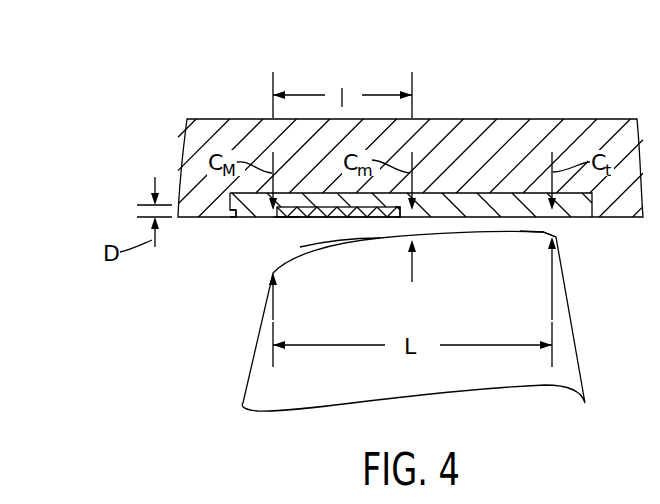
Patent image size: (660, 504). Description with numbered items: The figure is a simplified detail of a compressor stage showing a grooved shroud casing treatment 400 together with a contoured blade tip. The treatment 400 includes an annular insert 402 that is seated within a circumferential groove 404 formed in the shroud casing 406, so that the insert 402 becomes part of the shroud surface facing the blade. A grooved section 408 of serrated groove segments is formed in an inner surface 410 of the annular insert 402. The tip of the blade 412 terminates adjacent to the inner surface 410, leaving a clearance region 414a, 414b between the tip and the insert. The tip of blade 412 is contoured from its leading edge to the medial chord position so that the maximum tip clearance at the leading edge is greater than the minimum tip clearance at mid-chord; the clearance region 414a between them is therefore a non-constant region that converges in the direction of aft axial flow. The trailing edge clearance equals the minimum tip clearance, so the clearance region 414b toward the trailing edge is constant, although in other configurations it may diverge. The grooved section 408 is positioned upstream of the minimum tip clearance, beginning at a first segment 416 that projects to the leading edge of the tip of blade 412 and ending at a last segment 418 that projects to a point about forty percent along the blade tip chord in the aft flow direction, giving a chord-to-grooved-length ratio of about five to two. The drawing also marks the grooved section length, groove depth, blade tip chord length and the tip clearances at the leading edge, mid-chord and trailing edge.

The grooved shroud casing treatment 400 is at (513, 82).
The annular insert 402 is at (503, 190).
The circumferential groove 404 is at (600, 213).
The shroud casing 406 is at (602, 137).
The grooved section 408 is at (287, 232).
The inner surface 410 is at (237, 218).
The blade 412 is at (344, 387).
The non-constant clearance region 414a is at (320, 240).
The constant clearance region 414b is at (545, 228).
The first segment 416 is at (273, 218).
The last segment 418 is at (393, 217).